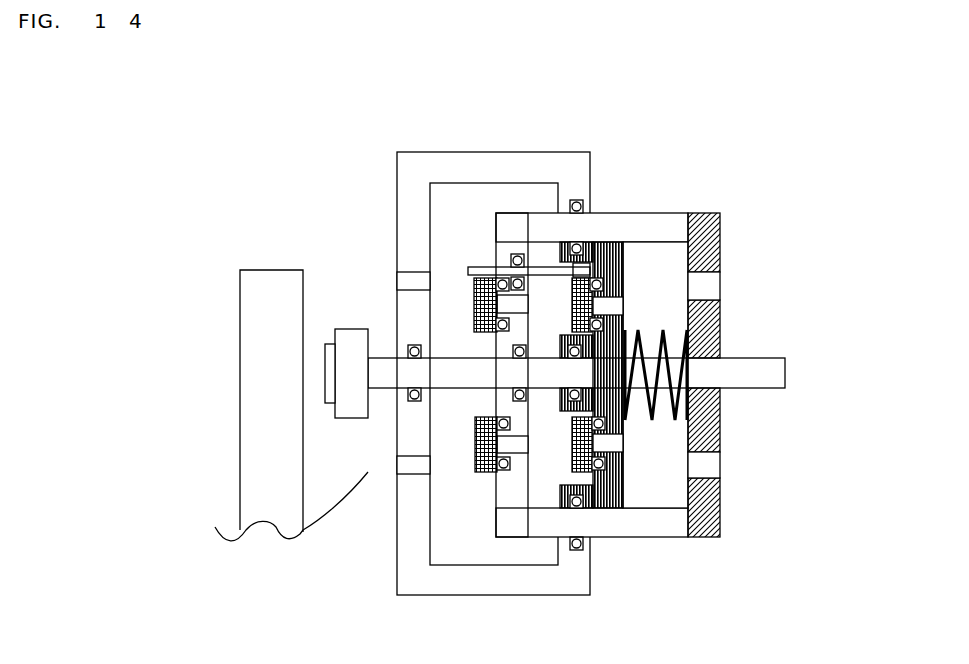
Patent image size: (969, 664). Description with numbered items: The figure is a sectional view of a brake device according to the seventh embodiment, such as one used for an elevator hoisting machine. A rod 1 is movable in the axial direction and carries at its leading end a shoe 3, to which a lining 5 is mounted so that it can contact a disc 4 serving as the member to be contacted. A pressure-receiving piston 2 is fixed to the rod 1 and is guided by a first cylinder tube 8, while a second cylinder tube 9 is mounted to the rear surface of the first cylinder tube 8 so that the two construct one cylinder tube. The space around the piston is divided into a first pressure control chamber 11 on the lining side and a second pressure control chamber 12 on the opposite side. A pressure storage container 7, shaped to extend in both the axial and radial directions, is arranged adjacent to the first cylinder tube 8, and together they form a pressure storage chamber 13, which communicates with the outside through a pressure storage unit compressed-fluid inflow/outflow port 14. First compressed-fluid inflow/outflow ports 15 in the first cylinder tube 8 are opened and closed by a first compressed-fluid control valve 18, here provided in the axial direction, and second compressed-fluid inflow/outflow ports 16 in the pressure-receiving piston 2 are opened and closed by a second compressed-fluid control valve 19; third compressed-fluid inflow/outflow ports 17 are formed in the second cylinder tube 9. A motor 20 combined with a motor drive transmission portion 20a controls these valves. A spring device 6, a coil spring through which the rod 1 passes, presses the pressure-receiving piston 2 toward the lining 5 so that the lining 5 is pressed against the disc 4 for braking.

The rod 1 is at (763, 373).
The pressure-receiving piston 2 is at (648, 304).
The shoe 3 is at (350, 385).
The disc 4 is at (265, 355).
The lining 5 is at (325, 358).
The spring device 6 is at (668, 337).
The pressure storage container 7 is at (408, 177).
The first cylinder tube 8 is at (640, 527).
The second cylinder tube 9 is at (700, 518).
The first pressure control chamber 11 is at (540, 478).
The second pressure control chamber 12 is at (688, 262).
The pressure storage chamber 13 is at (470, 200).
The pressure storage unit compressed-fluid inflow/outflow port 14 is at (413, 277).
The first compressed-fluid inflow/outflow ports 15 is at (512, 443).
The second compressed-fluid inflow/outflow ports 16 is at (610, 441).
The third compressed-fluid inflow/outflow ports 17 is at (705, 463).
The first compressed-fluid control valve 18 is at (485, 451).
The second compressed-fluid control valve 19 is at (615, 268).
The motor 20 is at (580, 268).
The motor drive transmission portion 20a is at (543, 268).